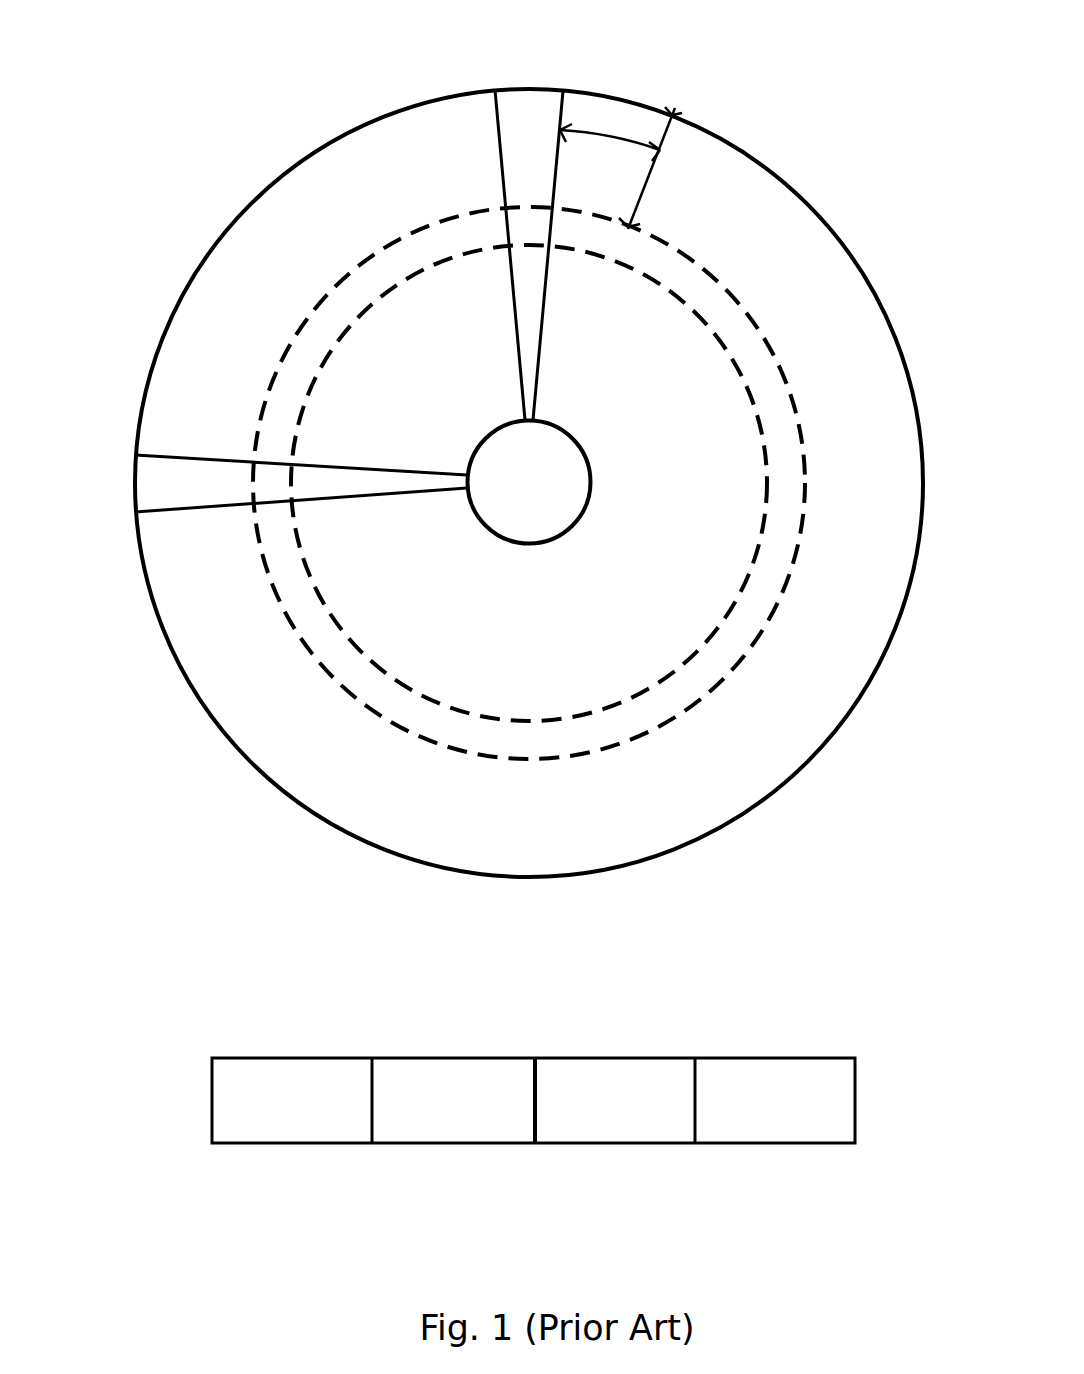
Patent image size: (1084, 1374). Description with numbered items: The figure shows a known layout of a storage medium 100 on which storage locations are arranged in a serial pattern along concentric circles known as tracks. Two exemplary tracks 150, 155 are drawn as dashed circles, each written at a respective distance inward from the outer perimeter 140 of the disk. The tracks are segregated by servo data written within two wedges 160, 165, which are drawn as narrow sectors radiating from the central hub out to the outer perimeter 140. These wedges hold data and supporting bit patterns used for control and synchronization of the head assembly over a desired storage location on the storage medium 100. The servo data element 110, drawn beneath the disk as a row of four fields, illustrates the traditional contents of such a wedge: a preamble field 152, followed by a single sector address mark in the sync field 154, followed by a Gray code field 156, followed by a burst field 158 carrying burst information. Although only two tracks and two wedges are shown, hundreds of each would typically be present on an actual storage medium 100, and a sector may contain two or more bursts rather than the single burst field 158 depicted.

The storage medium 100 is at (170, 56).
The servo data element 110 is at (683, 1013).
The outer perimeter 140 is at (800, 193).
The track 150 is at (705, 272).
The track 155 is at (720, 337).
The wedge 160 is at (528, 92).
The wedge 165 is at (142, 487).
The preamble field 152 is at (271, 1134).
The sync field 154 is at (432, 1134).
The gray code field 156 is at (594, 1134).
The burst field 158 is at (754, 1134).